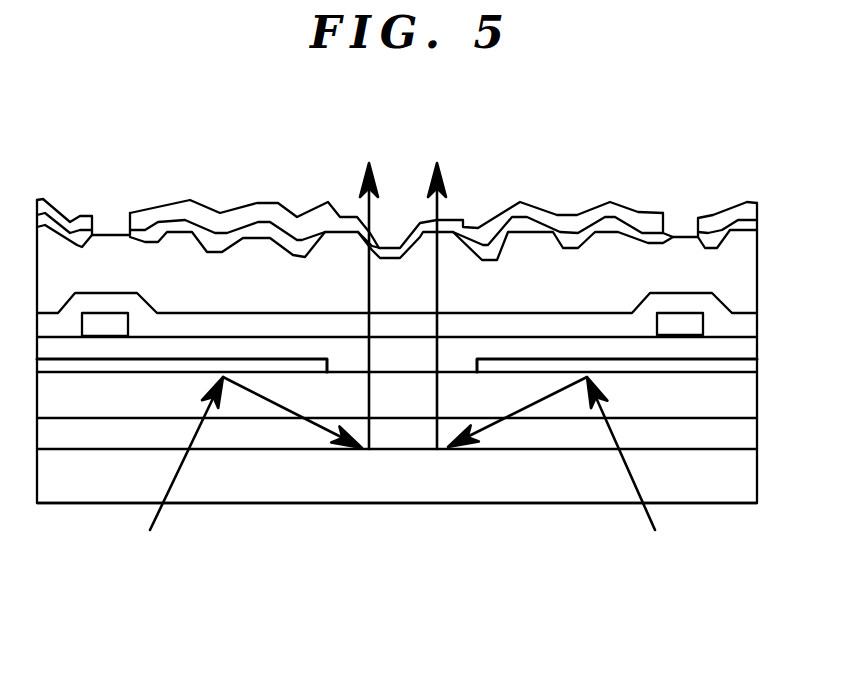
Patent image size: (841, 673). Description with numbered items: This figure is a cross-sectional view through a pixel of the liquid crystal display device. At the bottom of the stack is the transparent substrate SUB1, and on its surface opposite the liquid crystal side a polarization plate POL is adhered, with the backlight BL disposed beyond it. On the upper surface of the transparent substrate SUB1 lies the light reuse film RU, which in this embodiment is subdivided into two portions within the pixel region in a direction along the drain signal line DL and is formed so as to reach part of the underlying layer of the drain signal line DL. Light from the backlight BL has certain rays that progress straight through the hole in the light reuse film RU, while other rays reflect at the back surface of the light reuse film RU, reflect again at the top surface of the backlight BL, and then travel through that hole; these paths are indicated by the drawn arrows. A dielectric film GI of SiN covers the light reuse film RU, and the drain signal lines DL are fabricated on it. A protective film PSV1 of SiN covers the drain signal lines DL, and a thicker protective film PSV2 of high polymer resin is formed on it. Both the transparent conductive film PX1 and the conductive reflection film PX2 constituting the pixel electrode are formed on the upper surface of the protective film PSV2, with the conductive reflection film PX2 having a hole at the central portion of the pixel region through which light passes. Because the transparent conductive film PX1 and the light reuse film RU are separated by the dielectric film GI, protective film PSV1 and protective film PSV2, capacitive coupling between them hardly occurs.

The conductive reflection film PX2 is at (50, 208).
The drain signal line DL is at (109, 322).
The protective film PSV2 is at (268, 257).
The transparent conductive film PX1 is at (383, 240).
The light reuse film RU is at (92, 368).
The protective film PSV1 is at (255, 327).
The dielectric film GI is at (342, 358).
The backlight BL is at (427, 482).
The polarization plate POL is at (512, 437).
The transparent substrate SUB1 is at (558, 407).